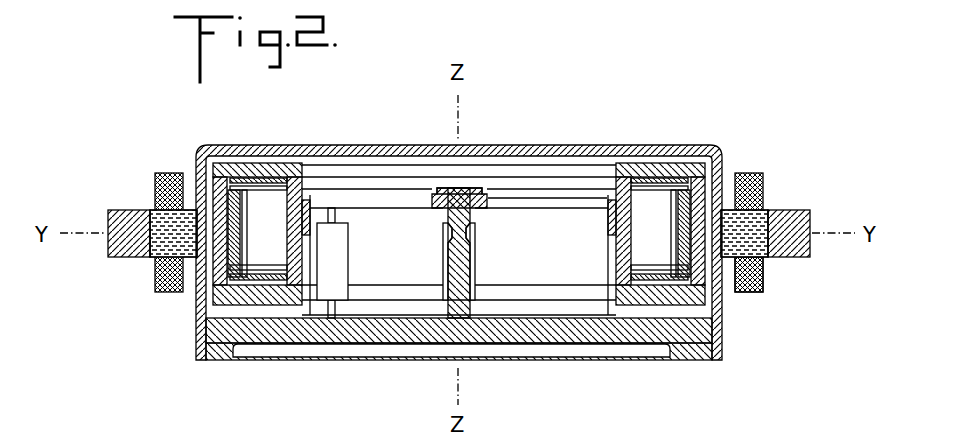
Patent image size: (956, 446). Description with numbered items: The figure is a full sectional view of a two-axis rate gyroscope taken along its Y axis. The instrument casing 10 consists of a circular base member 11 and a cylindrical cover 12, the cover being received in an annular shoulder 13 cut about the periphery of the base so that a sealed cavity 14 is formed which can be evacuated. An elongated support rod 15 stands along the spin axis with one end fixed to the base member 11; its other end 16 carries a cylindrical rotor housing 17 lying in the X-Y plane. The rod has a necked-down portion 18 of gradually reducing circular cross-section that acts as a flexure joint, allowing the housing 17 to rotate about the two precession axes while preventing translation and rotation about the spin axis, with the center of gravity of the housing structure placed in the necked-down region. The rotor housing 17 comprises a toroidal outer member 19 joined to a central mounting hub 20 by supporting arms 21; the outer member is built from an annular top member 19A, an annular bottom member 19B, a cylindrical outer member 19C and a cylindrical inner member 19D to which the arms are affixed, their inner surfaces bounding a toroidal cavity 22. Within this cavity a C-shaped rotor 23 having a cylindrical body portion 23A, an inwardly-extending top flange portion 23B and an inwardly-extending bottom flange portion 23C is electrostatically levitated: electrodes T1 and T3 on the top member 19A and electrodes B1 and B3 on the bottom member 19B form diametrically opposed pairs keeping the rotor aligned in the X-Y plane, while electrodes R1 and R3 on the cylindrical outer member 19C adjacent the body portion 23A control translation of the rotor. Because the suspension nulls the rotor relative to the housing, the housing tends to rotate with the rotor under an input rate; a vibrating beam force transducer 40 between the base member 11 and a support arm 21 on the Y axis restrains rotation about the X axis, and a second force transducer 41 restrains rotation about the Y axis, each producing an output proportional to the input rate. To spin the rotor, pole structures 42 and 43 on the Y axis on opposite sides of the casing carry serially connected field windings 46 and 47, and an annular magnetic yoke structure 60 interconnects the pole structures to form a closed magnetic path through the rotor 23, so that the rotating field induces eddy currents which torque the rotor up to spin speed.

The instrument casing 10 is at (732, 327).
The base member 11 is at (572, 330).
The cylindrical cover 12 is at (463, 175).
The shoulder 13 is at (713, 353).
The cavity 14 is at (530, 275).
The support rod 15 is at (463, 260).
The end of support rod 16 is at (468, 188).
The rotor housing 17 is at (558, 191).
The necked-down portion 18 is at (458, 237).
The outer member 19 is at (310, 162).
The top member 19A is at (238, 163).
The bottom member 19B is at (277, 298).
The cylindrical outer member 19C is at (763, 280).
The cylindrical inner member 19D is at (626, 220).
The central mounting hub 20 is at (446, 188).
The supporting arms 21 is at (375, 207).
The toroidal cavity 22 is at (643, 230).
The rotor 23 is at (664, 241).
The cylindrical body portion 23A is at (242, 245).
The top flange portion 23B is at (275, 188).
The bottom flange portion 23C is at (272, 262).
The force transducer 40 is at (340, 253).
The force transducer 41 is at (478, 277).
The pole structure 42 is at (158, 243).
The pole structure 43 is at (766, 213).
The field winding 46 is at (165, 174).
The field winding 47 is at (750, 175).
The magnetic yoke structure 60 is at (122, 223).
The suspension electrode R1 is at (230, 185).
The suspension electrode R3 is at (720, 300).
The suspension electrode T1 is at (270, 178).
The suspension electrode T3 is at (677, 180).
The suspension electrode B1 is at (255, 272).
The suspension electrode B3 is at (660, 297).